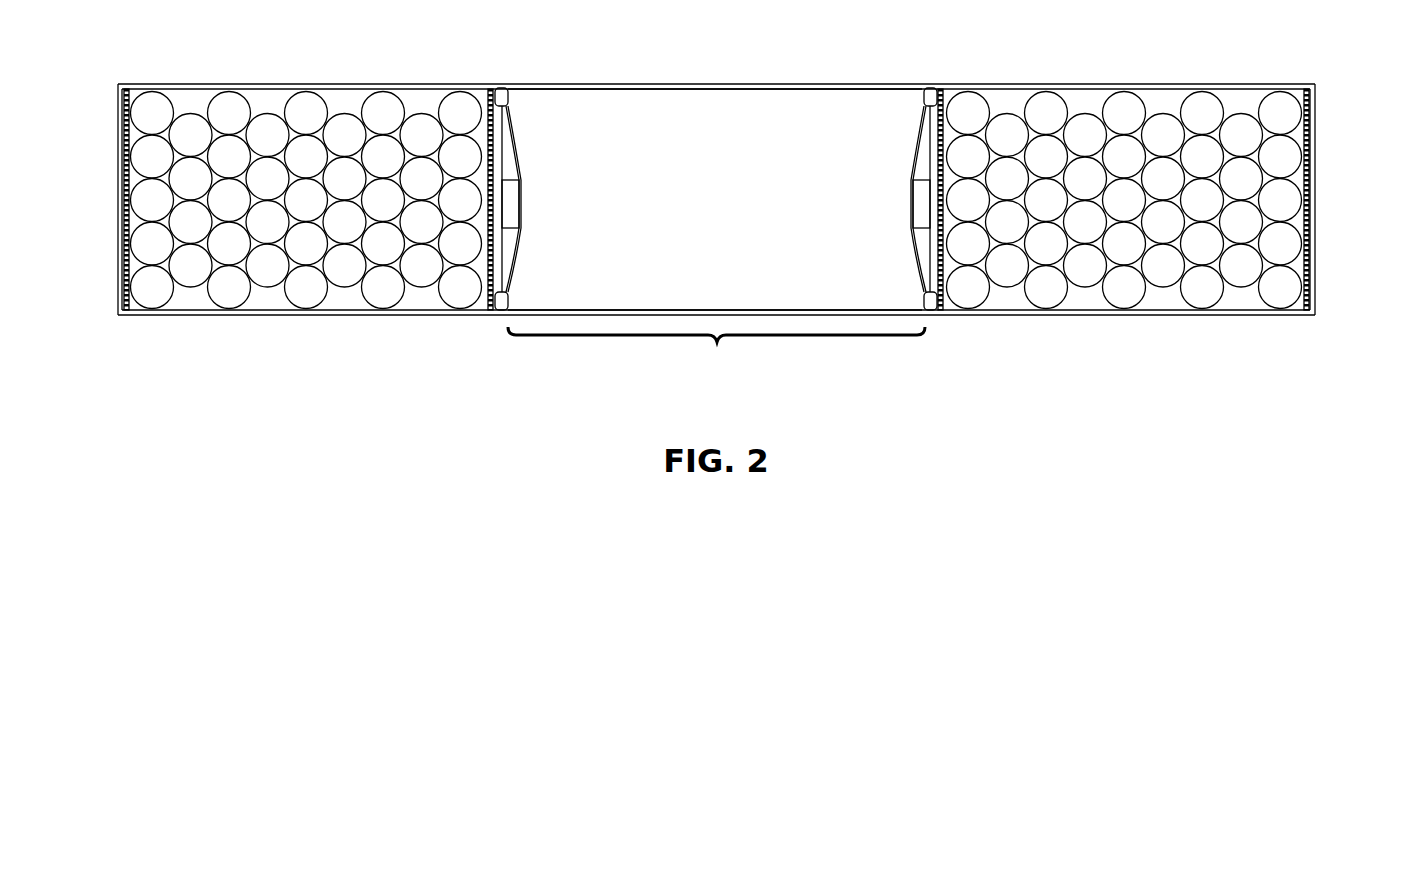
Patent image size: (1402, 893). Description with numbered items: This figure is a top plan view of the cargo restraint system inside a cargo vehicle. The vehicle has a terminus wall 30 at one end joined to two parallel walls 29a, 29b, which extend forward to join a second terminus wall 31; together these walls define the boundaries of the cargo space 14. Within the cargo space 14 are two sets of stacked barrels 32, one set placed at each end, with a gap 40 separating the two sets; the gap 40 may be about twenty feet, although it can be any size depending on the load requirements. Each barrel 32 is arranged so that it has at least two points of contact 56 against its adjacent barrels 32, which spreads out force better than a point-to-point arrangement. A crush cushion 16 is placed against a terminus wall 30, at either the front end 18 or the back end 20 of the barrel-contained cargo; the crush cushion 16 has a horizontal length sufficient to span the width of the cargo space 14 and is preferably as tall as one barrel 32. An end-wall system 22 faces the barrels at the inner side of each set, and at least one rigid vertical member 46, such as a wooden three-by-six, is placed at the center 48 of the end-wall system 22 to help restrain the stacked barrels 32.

The cargo space 14 is at (788, 119).
The crush cushion 16 is at (121, 240).
The front end 18 is at (267, 200).
The back end 20 is at (505, 148).
The end-wall system 22 is at (500, 264).
The parallel wall 29a is at (571, 85).
The parallel wall 29b is at (562, 316).
The terminus wall 30 is at (119, 137).
The second terminus wall 31 is at (1317, 140).
The barrel 32 is at (428, 110).
The gap 40 is at (716, 348).
The rigid vertical member 46 is at (513, 202).
The center 48 is at (925, 212).
The point of contact 56 is at (328, 280).